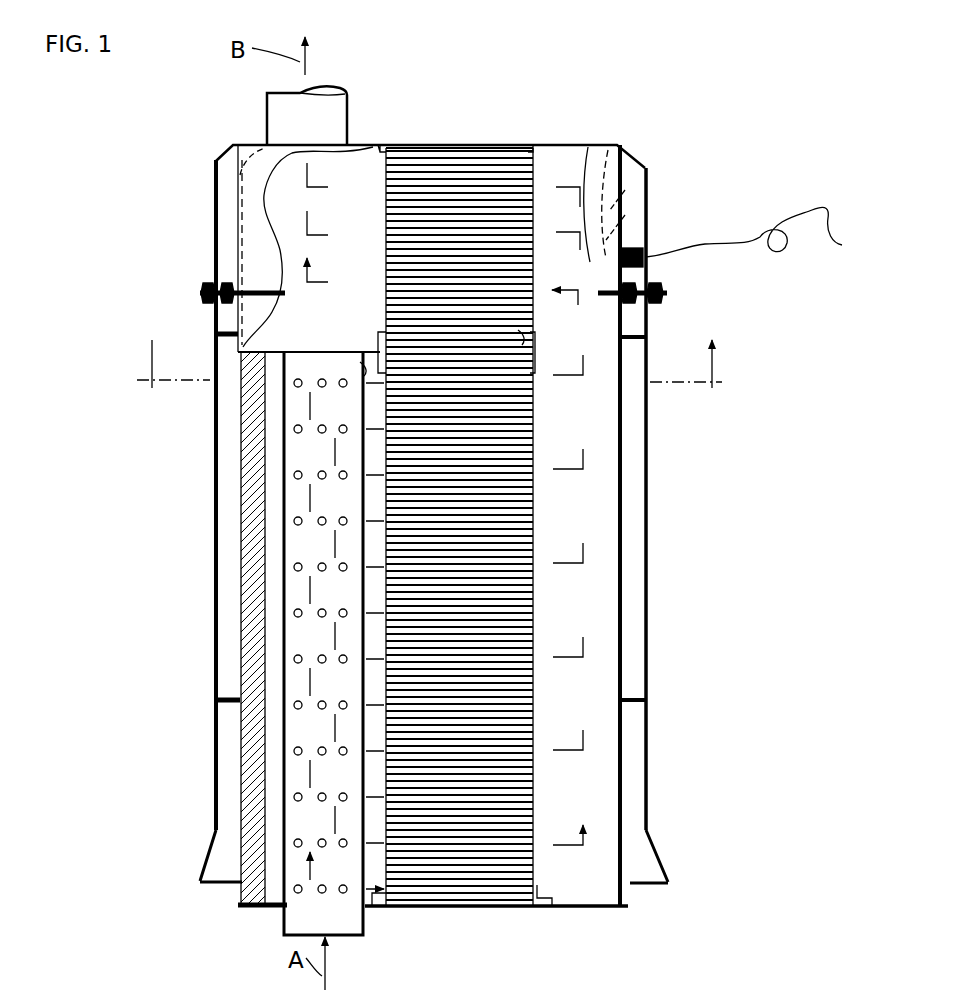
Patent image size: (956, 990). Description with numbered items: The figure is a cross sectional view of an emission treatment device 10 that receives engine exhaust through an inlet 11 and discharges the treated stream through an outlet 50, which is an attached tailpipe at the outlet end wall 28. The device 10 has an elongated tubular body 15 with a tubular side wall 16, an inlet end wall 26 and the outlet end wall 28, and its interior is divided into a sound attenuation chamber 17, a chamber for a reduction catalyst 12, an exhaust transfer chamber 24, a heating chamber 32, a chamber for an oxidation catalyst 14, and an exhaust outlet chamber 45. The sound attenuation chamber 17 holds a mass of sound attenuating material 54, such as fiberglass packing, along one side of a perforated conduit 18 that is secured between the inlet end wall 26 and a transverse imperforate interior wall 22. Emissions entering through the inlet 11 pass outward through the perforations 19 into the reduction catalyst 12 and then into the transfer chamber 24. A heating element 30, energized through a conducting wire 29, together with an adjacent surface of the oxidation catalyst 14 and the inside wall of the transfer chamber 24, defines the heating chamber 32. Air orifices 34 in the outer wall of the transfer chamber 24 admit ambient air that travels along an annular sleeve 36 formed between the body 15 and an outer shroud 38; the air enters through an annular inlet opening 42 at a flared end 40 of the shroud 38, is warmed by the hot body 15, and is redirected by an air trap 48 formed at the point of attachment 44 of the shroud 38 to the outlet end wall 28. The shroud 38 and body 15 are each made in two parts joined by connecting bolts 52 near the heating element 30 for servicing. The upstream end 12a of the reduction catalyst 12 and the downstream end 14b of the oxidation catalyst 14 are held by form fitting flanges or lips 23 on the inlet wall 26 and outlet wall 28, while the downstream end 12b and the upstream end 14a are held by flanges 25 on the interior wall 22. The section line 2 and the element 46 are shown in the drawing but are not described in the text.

The emission treatment device 10 is at (662, 655).
The inlet 11 is at (285, 925).
The reduction catalyst 12 is at (490, 683).
The upstream end of the reduction catalyst 12a is at (430, 905).
The downstream end of the reduction catalyst 12b is at (530, 325).
The oxidation catalyst 14 is at (488, 180).
The upstream end of the oxidation catalyst 14a is at (500, 325).
The downstream end of the oxidation catalyst 14b is at (473, 148).
The elongated tubular body 15 is at (625, 910).
The tubular side wall 16 is at (625, 758).
The sound attenuation chamber 17 is at (252, 885).
The perforated conduit 18 is at (300, 678).
The perforations 19 is at (300, 757).
The section line 2- 2 is at (434, 376).
The imperforate interior wall 22 is at (297, 352).
The form fitting flanges or lips 23 is at (380, 145).
The exhaust transfer chamber 24 is at (585, 517).
The form fitting flanges 25 is at (360, 368).
The inlet end wall 26 is at (578, 910).
The outlet end wall 28 is at (420, 145).
The conducting wire 29 is at (759, 232).
The heating element 30 is at (633, 230).
The heating chamber 32 is at (570, 200).
The air orifices 34 is at (633, 190).
The annular sleeve 36 is at (630, 548).
The outer shroud 38 is at (650, 440).
The flared end 40 is at (668, 866).
The annular inlet opening 42 is at (657, 890).
The point of attachment 44 is at (233, 145).
The exhaust outlet chamber 45 is at (290, 226).
The spacer 46 is at (640, 337).
The air trap 48 is at (640, 165).
The outlet 50 is at (330, 100).
The connecting bolts 52 is at (205, 293).
The sound attenuating material 54 is at (245, 530).